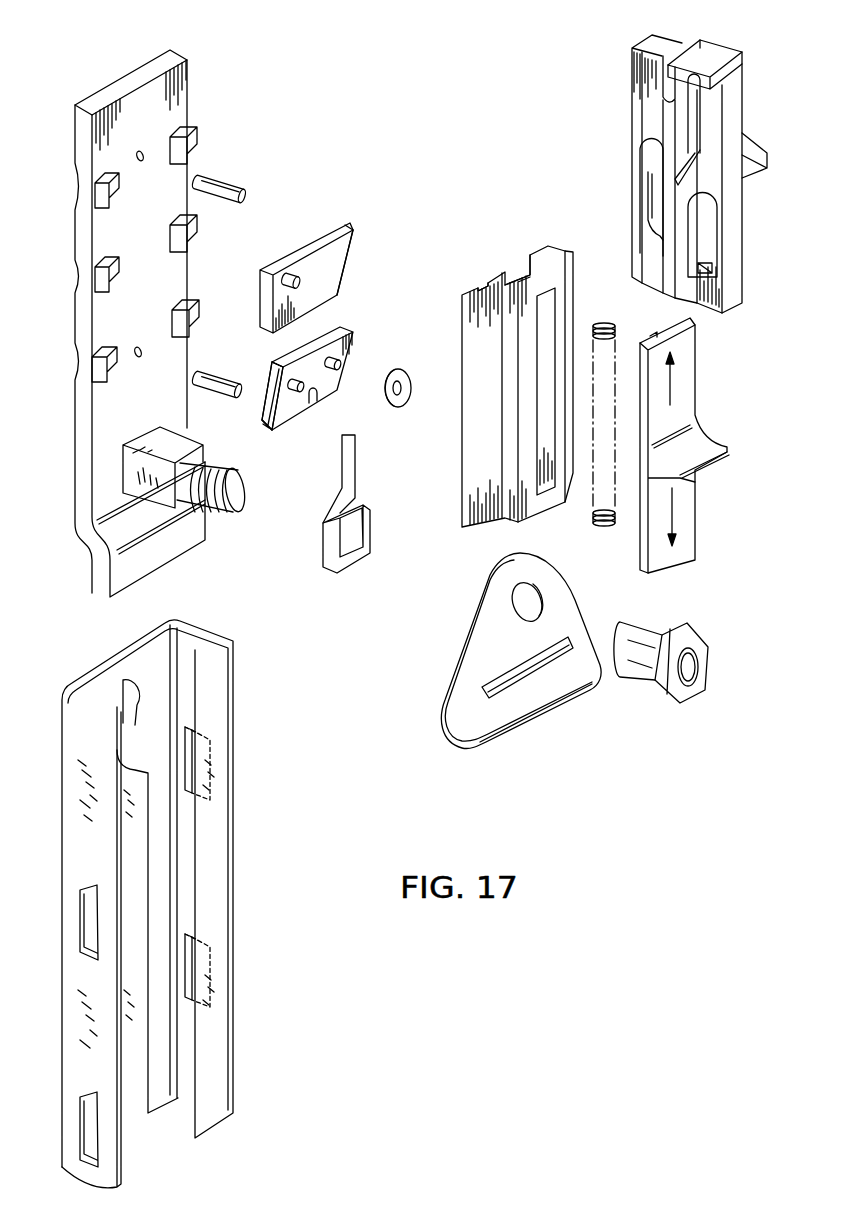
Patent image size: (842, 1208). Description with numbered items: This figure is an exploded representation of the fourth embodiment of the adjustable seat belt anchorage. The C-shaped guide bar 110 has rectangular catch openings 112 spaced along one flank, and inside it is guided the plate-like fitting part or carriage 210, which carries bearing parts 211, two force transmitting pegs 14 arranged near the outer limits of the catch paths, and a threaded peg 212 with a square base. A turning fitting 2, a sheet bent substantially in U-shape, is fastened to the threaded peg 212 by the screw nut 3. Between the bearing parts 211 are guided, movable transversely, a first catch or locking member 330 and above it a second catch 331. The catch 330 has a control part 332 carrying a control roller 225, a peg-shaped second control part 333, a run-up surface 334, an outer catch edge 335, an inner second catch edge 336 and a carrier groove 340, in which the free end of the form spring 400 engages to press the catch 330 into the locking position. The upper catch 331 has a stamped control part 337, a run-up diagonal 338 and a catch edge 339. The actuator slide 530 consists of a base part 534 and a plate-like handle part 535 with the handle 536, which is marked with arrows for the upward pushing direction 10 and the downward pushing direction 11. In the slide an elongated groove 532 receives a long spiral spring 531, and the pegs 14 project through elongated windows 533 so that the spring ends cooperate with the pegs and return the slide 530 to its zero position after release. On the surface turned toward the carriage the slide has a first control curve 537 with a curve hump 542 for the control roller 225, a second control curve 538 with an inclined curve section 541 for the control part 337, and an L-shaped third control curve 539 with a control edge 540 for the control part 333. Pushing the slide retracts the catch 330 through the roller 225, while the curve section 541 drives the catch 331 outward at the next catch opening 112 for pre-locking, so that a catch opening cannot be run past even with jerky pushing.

The turning fitting 2 is at (562, 615).
The screw nut 3 is at (702, 650).
The pushing direction 10 is at (671, 391).
The pushing direction 11 is at (664, 513).
The force transmitting pegs 14 is at (227, 187).
The guide bar 110 is at (147, 900).
The catch opening 112 is at (212, 745).
The fitting part or carriage 210 is at (78, 462).
The bearing parts 211 is at (192, 147).
The threaded peg 212 is at (157, 432).
The control roller 225 is at (398, 405).
The first catch or locking member 330 is at (322, 401).
The second catch 331 is at (330, 258).
The control part 332 is at (341, 360).
The second control part 333 is at (298, 392).
The run-up surface 334 is at (267, 402).
The outer catch edge 335 is at (264, 430).
The second catch edge 336 is at (272, 368).
The control part 337 is at (290, 272).
The run-up diagonal 338 is at (350, 256).
The catch edge 339 is at (350, 223).
The carrier groove 340 is at (318, 403).
The form spring 400 is at (348, 562).
The actuator slide 530 is at (618, 301).
The spiral spring 531 is at (606, 323).
The elongated groove 532 is at (543, 497).
The windows 533 is at (518, 270).
The base part 534 is at (493, 527).
The handle part 535 is at (707, 300).
The handle 536 is at (753, 143).
The first control curve 537 is at (648, 174).
The second control curve 538 is at (486, 286).
The third control curve 539 is at (708, 240).
The control edge 540 is at (704, 273).
The curve section 541 is at (688, 175).
The curve hump 542 is at (648, 232).